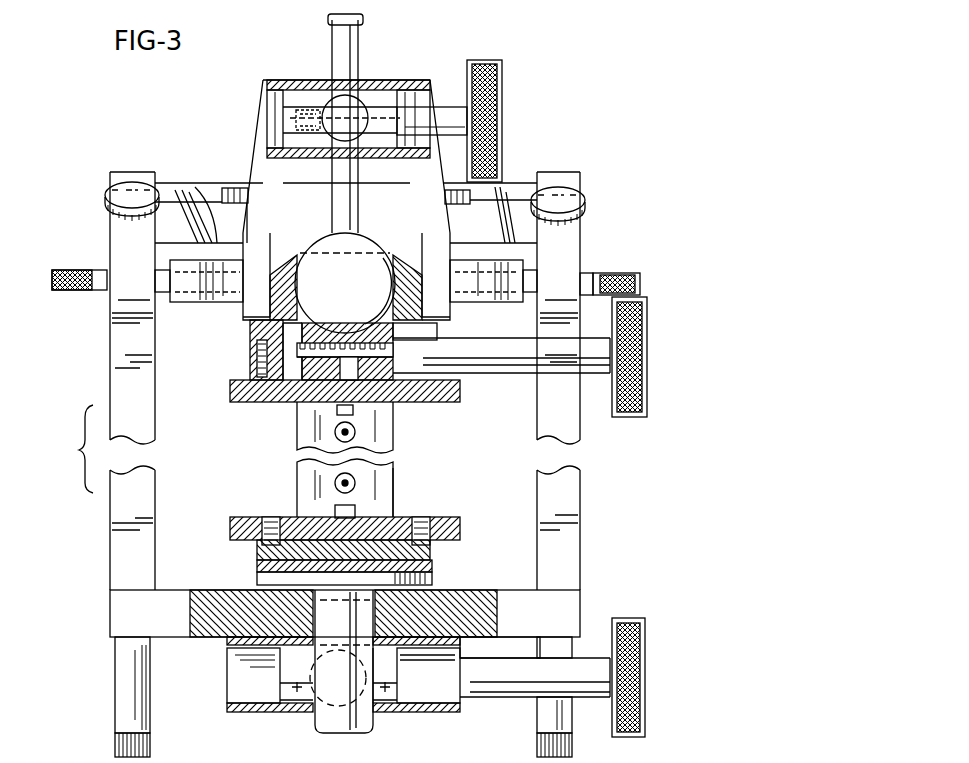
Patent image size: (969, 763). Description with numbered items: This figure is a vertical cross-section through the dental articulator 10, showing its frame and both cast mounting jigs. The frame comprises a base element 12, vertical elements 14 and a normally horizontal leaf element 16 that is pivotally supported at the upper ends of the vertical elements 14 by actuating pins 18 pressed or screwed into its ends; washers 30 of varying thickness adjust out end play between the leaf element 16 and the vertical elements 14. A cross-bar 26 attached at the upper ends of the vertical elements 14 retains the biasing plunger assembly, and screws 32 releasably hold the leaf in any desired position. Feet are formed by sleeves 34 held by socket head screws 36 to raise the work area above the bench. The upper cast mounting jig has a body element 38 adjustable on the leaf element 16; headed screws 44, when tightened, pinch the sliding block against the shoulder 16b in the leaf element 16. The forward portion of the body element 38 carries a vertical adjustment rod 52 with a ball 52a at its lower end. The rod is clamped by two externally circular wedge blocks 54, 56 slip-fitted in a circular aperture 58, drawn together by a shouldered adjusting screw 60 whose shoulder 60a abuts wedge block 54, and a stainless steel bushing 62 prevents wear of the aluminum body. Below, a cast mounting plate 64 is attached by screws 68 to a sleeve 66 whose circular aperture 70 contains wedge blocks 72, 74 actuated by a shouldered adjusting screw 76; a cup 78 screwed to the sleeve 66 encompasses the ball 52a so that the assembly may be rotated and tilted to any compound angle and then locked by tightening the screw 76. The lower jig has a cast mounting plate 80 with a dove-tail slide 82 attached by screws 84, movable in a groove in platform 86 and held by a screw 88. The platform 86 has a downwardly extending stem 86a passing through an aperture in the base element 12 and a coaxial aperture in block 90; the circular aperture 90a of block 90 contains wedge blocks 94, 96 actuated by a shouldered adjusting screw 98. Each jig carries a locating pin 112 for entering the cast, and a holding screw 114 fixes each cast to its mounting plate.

The articulator 10 is at (607, 79).
The base element 12 is at (566, 610).
The vertical elements 14 is at (110, 514).
The leaf element 16 is at (223, 294).
The shoulder 16b is at (188, 185).
The actuating pins 18 is at (62, 270).
The cross-bar 26 is at (513, 185).
The washers 30 is at (165, 261).
The screws 32 is at (108, 197).
The sleeves 34 is at (113, 692).
The socket head screws 36 is at (113, 744).
The body element 38 is at (254, 130).
The headed screw 44 is at (236, 187).
The vertical adjustment rod 52 is at (358, 217).
The ball 52a is at (365, 256).
The wedge block 54 is at (397, 100).
The wedge block 56 is at (292, 97).
The circular aperture 58 is at (455, 107).
The shouldered adjusting screw 60 is at (505, 75).
The shoulder 60a is at (393, 117).
The bushing 62 is at (322, 82).
The cast mounting plate 64 is at (460, 402).
The sleeve 66 is at (250, 344).
The screws 68 is at (262, 400).
The circular aperture 70 is at (300, 394).
The wedge block 72 is at (355, 412).
The wedge block 74 is at (298, 440).
The shouldered adjusting screw 76 is at (648, 362).
The cup 78 is at (284, 264).
The cast mounting plate 80 is at (462, 528).
The dove-tail slide 82 is at (432, 550).
The screws 84 is at (268, 517).
The platform 86 is at (257, 578).
The stem 86a is at (337, 724).
The screw 88 is at (400, 495).
The block 90 is at (420, 712).
The circular aperture 90a is at (240, 700).
The wedge block 94 is at (383, 680).
The wedge block 96 is at (297, 680).
The shouldered adjusting screw 98 is at (647, 640).
The locating pin 112 is at (375, 498).
The holding screw 114 is at (330, 472).